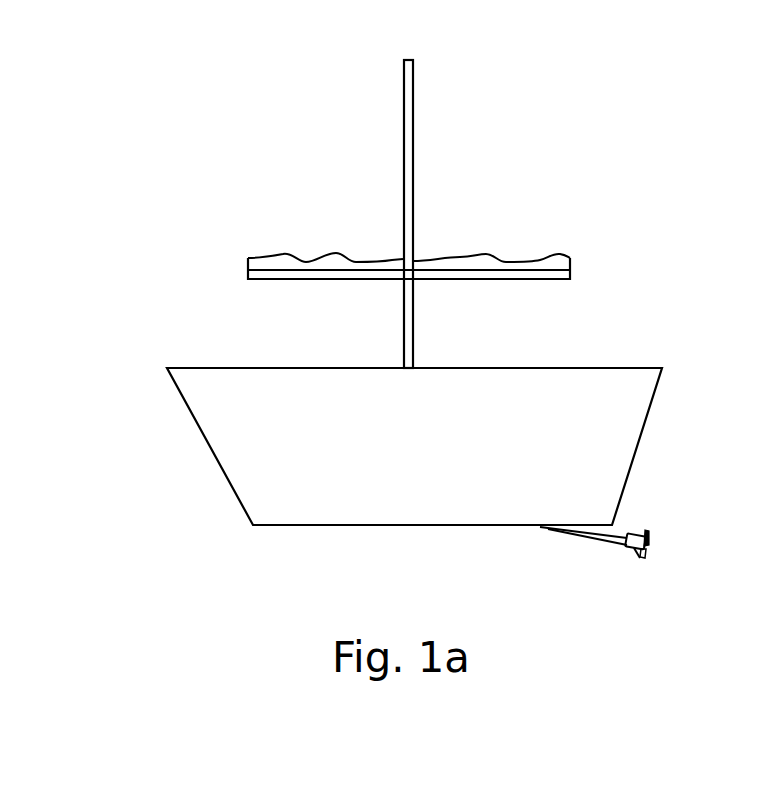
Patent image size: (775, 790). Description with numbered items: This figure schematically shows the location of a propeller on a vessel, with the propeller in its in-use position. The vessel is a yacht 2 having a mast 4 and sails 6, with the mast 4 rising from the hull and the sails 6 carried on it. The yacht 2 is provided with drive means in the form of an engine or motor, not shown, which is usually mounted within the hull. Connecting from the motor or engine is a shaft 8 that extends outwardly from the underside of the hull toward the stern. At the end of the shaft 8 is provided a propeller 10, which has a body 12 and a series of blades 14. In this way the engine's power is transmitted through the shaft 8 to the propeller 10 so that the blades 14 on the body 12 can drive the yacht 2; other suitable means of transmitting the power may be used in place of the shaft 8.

The yacht 2 is at (615, 430).
The mast 4 is at (413, 140).
The sails 6 is at (528, 262).
The shaft 8 is at (575, 537).
The propeller 10 is at (633, 553).
The body 12 is at (628, 555).
The blades 14 is at (648, 533).